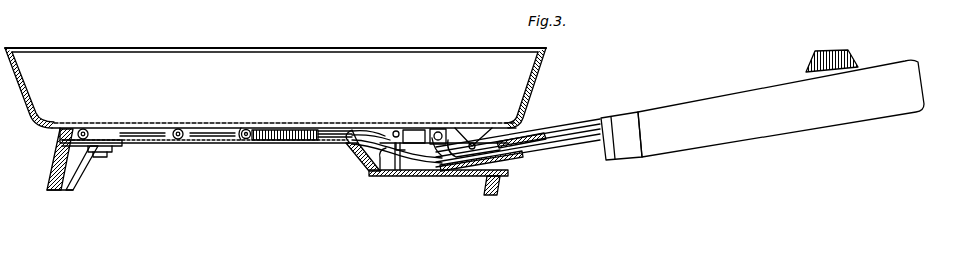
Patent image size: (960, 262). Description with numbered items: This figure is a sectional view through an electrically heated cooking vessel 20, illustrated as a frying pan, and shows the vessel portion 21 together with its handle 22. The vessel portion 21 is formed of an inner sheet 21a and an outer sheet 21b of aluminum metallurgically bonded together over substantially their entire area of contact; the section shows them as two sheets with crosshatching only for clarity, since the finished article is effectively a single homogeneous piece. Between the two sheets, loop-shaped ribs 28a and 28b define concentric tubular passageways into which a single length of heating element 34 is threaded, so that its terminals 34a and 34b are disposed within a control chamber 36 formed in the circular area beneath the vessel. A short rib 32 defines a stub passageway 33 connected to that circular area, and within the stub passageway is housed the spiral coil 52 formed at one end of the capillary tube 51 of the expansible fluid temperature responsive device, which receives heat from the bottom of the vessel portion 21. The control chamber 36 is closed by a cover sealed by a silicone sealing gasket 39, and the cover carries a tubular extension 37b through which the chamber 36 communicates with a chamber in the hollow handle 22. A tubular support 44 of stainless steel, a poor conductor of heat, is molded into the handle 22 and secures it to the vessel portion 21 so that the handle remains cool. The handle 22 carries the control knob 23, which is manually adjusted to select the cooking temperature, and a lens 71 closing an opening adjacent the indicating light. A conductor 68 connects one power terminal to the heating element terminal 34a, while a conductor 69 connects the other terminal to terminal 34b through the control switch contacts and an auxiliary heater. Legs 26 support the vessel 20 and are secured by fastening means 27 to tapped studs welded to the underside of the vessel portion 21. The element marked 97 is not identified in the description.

The cooking vessel 20 is at (200, 182).
The vessel portion 21 is at (357, 48).
The inner sheet 21a is at (540, 53).
The outer sheet 21b is at (547, 50).
The handle 22 is at (752, 144).
The control knob 23 is at (808, 64).
The legs 26 is at (68, 178).
The fastening means 27 is at (104, 156).
The rib 28a is at (58, 146).
The rib 28b is at (181, 143).
The short rib 32 is at (252, 143).
The stub passageway 33 is at (247, 128).
The heating element 34 is at (86, 129).
The terminal 34a is at (466, 140).
The terminal 34b is at (398, 130).
The control chamber 36 is at (372, 178).
The tubular extension 37b is at (530, 134).
The sealing gasket 39 is at (352, 150).
The tubular support 44 is at (602, 118).
The capillary tube 51 is at (438, 152).
The spiral coil 52 is at (276, 129).
The conductor 68 is at (560, 160).
The conductor 69 is at (447, 168).
The lens 71 is at (350, 140).
The housing bottom plate 97 is at (396, 173).